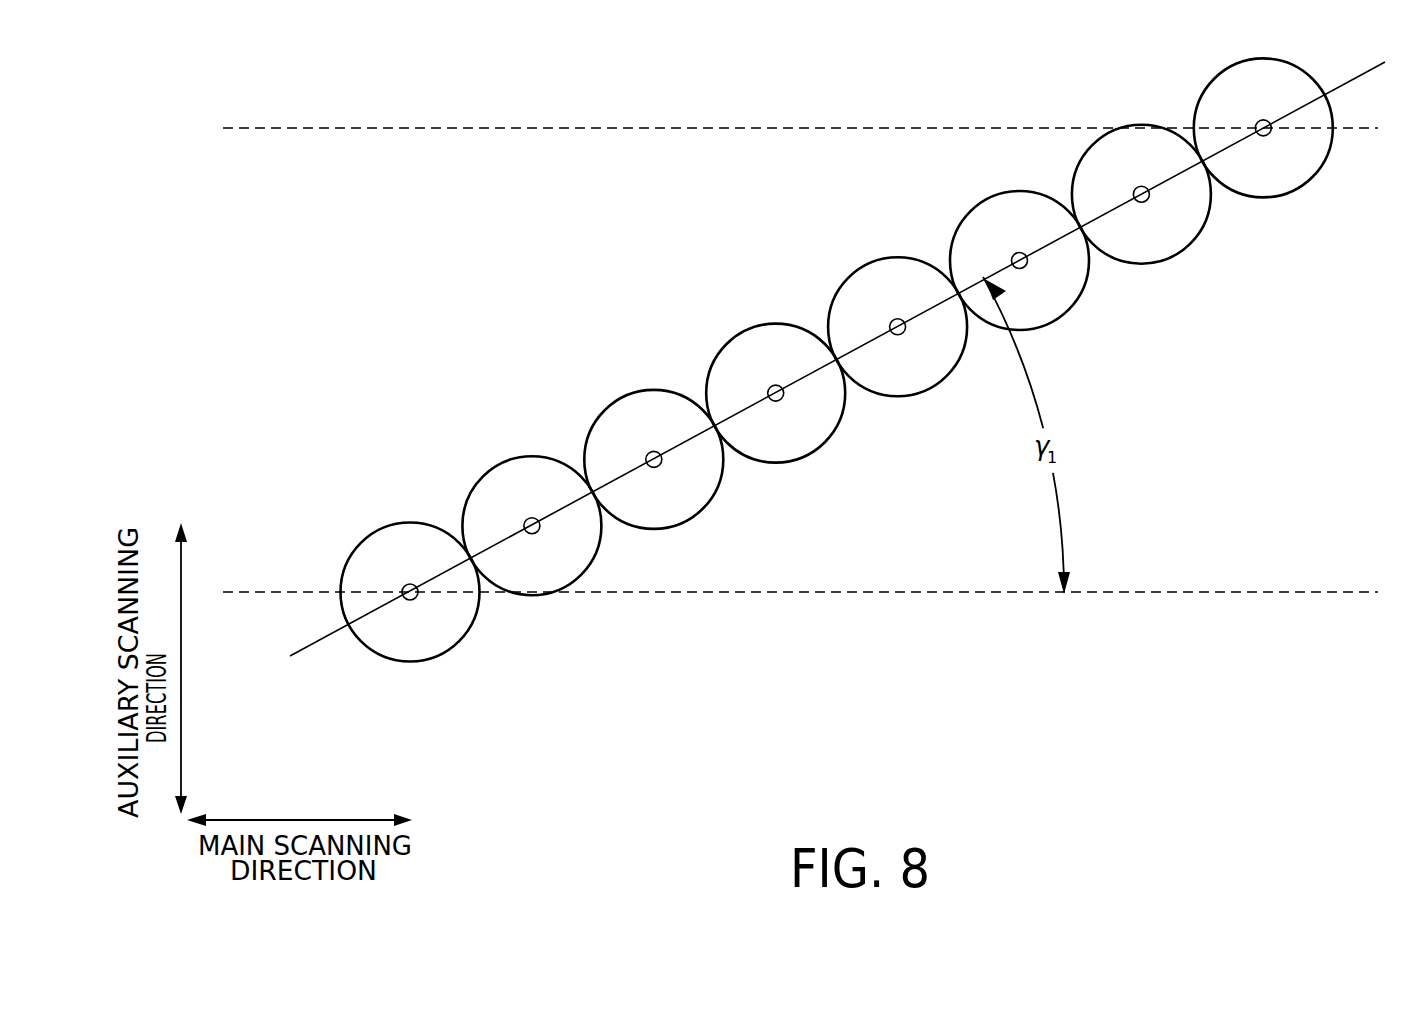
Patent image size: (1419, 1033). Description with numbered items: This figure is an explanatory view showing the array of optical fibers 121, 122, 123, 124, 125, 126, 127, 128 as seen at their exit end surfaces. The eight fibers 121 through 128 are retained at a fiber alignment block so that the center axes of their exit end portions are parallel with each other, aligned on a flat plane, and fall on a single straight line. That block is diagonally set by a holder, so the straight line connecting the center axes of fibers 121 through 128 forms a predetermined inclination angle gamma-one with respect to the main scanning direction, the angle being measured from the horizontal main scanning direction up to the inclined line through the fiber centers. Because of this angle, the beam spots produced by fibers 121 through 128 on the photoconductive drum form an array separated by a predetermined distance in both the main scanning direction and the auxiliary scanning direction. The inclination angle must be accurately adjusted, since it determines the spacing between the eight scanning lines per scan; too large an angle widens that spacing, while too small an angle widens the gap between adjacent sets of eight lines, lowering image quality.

The optical fiber 121 is at (432, 641).
The optical fiber 122 is at (554, 575).
The optical fiber 123 is at (676, 508).
The optical fiber 124 is at (798, 442).
The optical fiber 125 is at (920, 376).
The optical fiber 126 is at (1042, 310).
The optical fiber 127 is at (1163, 243).
The optical fiber 128 is at (1285, 177).